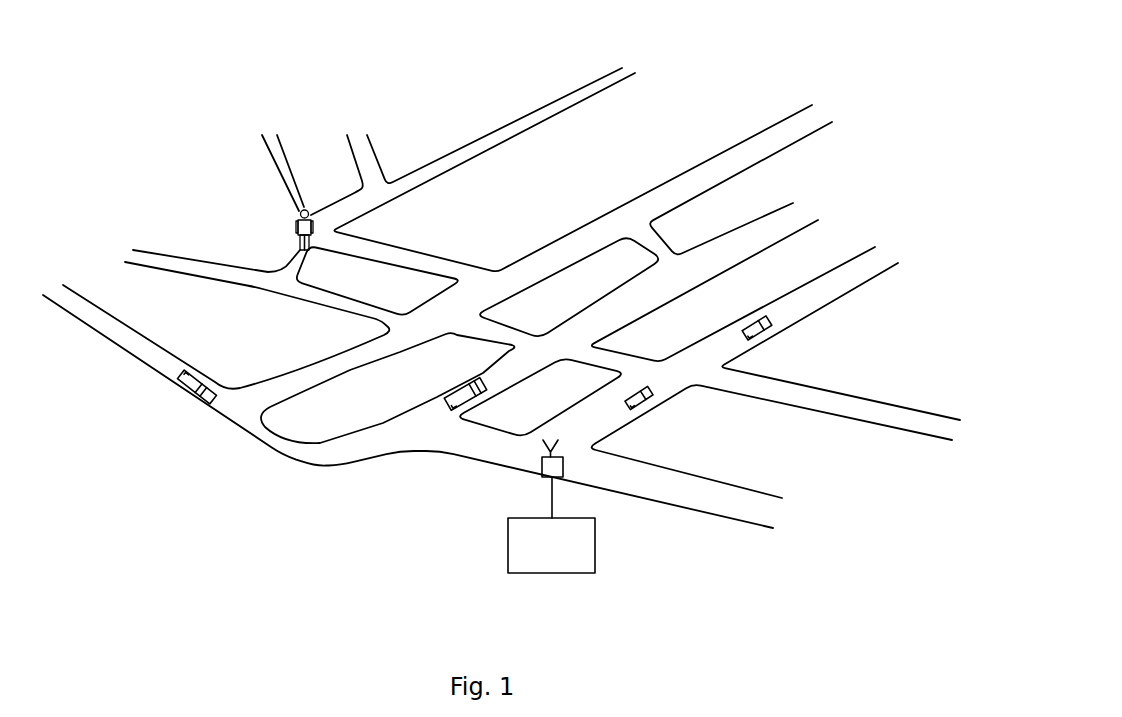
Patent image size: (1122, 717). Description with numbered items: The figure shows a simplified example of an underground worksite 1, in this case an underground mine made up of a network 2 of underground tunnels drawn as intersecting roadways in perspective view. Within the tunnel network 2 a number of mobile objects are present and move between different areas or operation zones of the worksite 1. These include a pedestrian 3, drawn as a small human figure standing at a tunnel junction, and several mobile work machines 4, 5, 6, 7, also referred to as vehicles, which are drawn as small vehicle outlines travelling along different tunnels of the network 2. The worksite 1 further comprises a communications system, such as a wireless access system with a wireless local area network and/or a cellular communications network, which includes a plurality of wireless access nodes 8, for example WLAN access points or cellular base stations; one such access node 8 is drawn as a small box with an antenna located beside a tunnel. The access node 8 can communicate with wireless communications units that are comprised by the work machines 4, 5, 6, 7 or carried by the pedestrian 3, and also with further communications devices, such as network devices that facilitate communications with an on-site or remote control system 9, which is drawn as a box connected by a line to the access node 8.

The underground worksite 1 is at (387, 89).
The network of underground tunnels 2 is at (426, 257).
The pedestrian 3 is at (297, 214).
The mobile work machine 4 is at (452, 410).
The mobile work machine 5 is at (183, 390).
The mobile work machine 6 is at (770, 329).
The mobile work machine 7 is at (647, 400).
The wireless access node 8 is at (543, 473).
The control system 9 is at (544, 558).